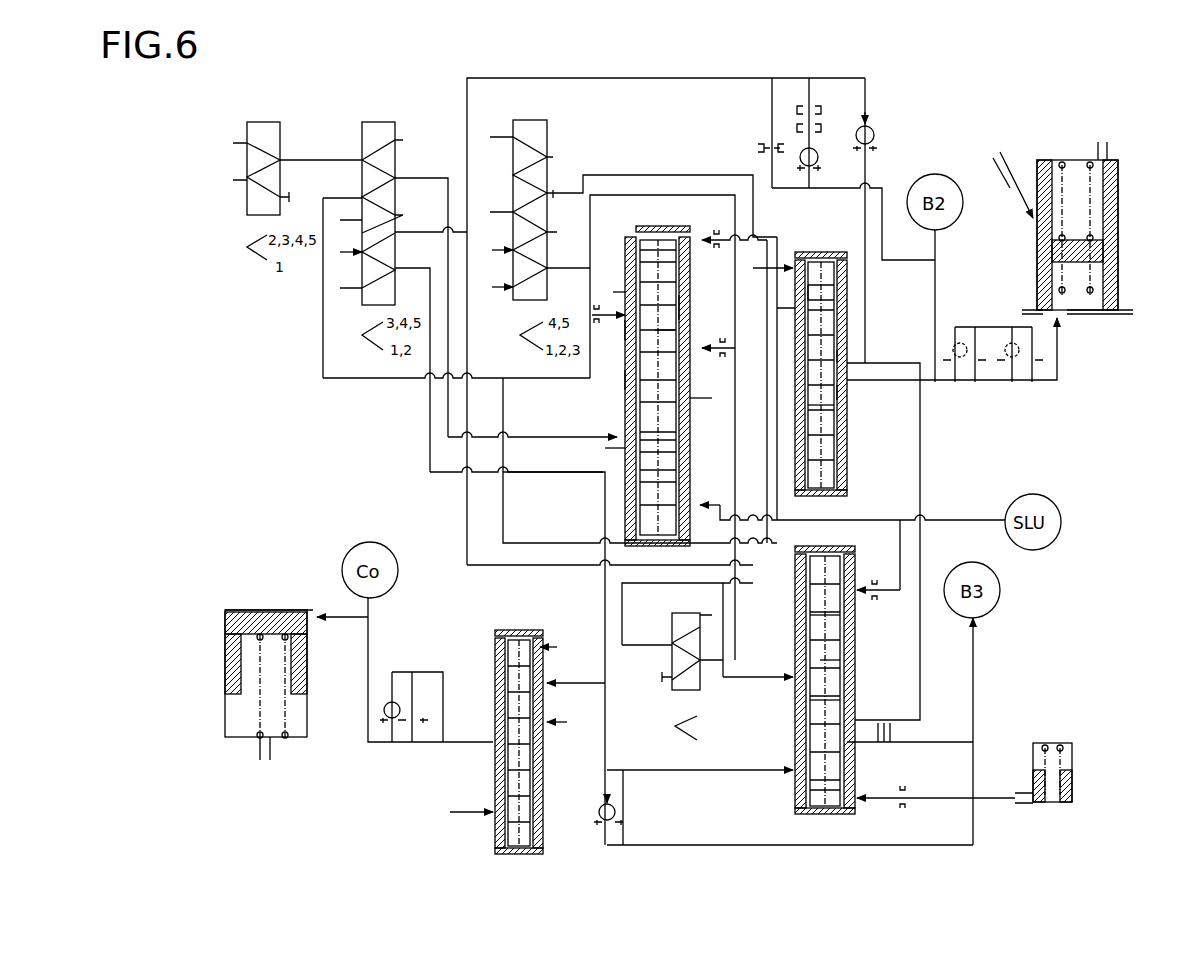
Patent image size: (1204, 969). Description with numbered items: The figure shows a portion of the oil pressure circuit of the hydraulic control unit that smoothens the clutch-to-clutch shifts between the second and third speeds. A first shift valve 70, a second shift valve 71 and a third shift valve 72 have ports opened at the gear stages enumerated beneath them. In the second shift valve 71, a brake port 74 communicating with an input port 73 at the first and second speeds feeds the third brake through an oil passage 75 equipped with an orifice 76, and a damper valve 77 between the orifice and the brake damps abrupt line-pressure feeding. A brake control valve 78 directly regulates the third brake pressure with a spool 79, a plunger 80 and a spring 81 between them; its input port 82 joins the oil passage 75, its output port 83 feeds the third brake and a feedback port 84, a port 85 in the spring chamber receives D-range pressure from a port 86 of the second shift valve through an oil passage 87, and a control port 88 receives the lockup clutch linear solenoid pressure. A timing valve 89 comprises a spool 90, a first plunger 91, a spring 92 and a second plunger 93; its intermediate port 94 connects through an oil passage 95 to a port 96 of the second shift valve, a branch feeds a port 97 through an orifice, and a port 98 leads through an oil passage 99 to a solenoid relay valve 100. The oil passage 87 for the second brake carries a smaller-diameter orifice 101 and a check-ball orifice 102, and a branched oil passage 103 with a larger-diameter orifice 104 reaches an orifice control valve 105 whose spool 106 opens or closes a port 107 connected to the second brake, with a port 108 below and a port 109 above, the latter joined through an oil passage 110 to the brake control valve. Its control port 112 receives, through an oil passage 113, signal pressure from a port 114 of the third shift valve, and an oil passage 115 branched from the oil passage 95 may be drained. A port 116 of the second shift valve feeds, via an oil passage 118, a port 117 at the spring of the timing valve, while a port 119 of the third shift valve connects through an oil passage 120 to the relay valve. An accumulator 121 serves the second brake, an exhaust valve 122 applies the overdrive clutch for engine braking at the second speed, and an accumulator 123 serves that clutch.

The 1-2 shift valve 70 is at (276, 116).
The 2-3 shift valve 71 is at (380, 118).
The 3-4 shift valve 72 is at (550, 120).
The input port 73 is at (362, 160).
The brake port 74 is at (395, 178).
The oil passage 75 is at (448, 437).
The orifice 76 is at (625, 808).
The damper valve 77 is at (1072, 765).
The B-3 control valve 78 is at (770, 806).
The spool 79 is at (850, 700).
The plunger 80 is at (845, 622).
The spring 81 is at (795, 665).
The input port 82 is at (795, 775).
The output port 83 is at (845, 748).
The feedback port 84 is at (845, 808).
The port 85 is at (850, 672).
The port 86 is at (395, 232).
The oil passage 87 is at (514, 78).
The control port 88 is at (857, 575).
The 2-3 timing valve 89 is at (655, 228).
The spool 90 is at (680, 305).
The first plunger 91 is at (676, 475).
The spring 92 is at (676, 440).
The second plunger 93 is at (650, 238).
The intermediate port 94 is at (625, 378).
The oil passage 95 is at (345, 378).
The port 96 is at (362, 198).
The port 97 is at (625, 330).
The port 98 is at (670, 340).
The oil passage 99 is at (622, 615).
The solenoid relay valve 100 is at (670, 700).
The smaller-diameter orifice 101 is at (758, 148).
The orifice having a check ball 102 is at (795, 138).
The oil passage 103 is at (866, 96).
The larger-diameter orifice 104 is at (873, 132).
The orifice control valve 105 is at (850, 492).
The spool 106 is at (830, 292).
The port 107 is at (847, 392).
The port 108 is at (845, 410).
The port 109 is at (847, 355).
The oil passage 110 is at (920, 475).
The control port 112 is at (797, 262).
The oil passage 113 is at (626, 175).
The port 114 is at (547, 268).
The oil passage 115 is at (503, 520).
The port 116 is at (395, 268).
The port 117 is at (623, 447).
The oil passage 118 is at (430, 472).
The port 119 is at (553, 195).
The oil passage 120 is at (667, 195).
The accumulator 121 is at (1118, 292).
The C-0 exhaust valve 122 is at (508, 630).
The accumulator 123 is at (307, 710).